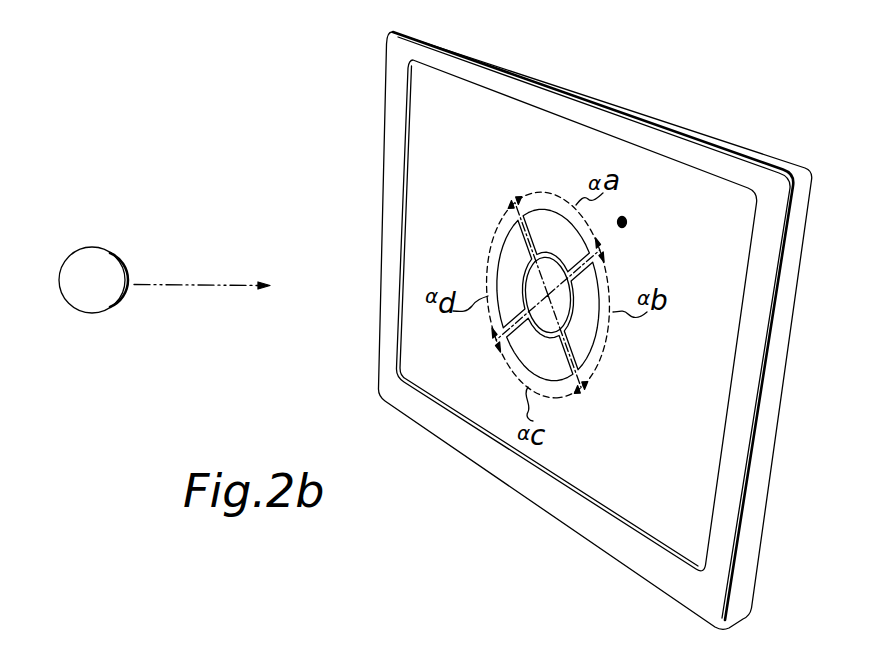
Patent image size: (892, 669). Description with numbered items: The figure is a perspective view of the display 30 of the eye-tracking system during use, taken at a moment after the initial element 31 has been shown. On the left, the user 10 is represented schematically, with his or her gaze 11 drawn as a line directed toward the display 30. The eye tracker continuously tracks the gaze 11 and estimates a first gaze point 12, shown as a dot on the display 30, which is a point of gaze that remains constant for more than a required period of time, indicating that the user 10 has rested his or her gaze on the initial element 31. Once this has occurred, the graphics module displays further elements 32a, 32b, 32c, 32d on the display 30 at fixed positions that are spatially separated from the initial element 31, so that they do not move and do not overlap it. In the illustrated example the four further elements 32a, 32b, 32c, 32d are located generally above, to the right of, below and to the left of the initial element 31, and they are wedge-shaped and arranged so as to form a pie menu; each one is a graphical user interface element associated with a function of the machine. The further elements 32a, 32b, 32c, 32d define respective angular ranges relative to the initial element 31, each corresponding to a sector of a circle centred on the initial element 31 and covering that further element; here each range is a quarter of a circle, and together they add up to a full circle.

The user 10 is at (128, 287).
The gaze 11 is at (240, 285).
The first gaze point 12 is at (626, 222).
The display 30 is at (533, 127).
The initial element 31 is at (506, 345).
The further element 32a is at (552, 238).
The further element 32b is at (587, 325).
The further element 32c is at (548, 368).
The further element 32d is at (506, 269).